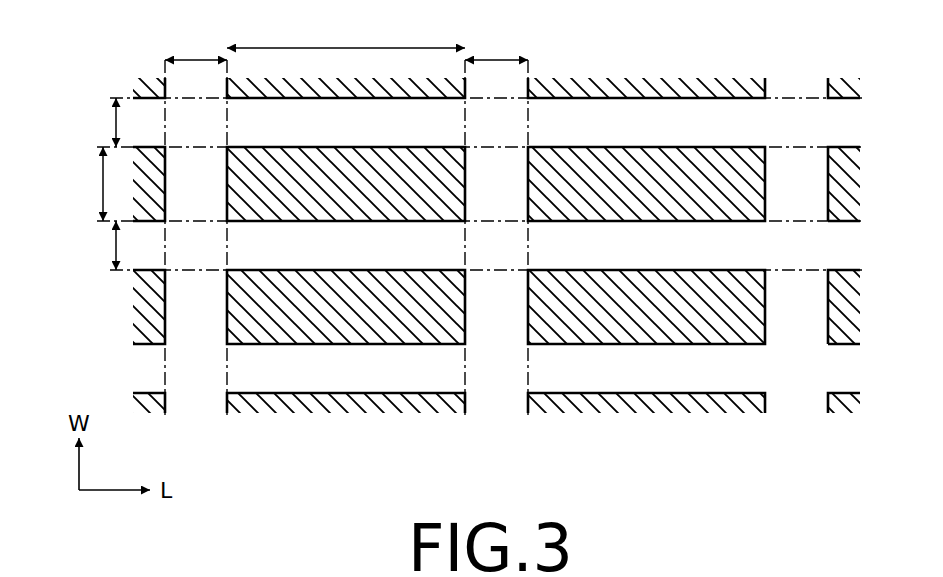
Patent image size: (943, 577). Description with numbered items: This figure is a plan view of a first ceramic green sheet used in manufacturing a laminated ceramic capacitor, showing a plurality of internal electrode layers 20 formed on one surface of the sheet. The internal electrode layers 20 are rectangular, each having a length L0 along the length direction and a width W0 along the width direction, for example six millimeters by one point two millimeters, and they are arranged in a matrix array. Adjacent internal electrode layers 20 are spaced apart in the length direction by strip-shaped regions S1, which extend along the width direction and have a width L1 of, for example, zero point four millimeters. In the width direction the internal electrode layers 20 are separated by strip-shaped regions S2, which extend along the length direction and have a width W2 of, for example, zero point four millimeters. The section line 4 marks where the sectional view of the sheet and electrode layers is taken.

The internal electrode layers 20 is at (496, 245).
The section line 4- 4 is at (133, 307).
The length of internal electrode layer L0 is at (345, 48).
The width of internal electrode layer W0 is at (103, 183).
The regions between internal electrode layers in the length direction S1 is at (349, 40).
The width of regions S1 L1 is at (190, 44).
The regions between internal electrode layers in the width direction S2 is at (64, 184).
The width of regions S2 W2 is at (101, 122).